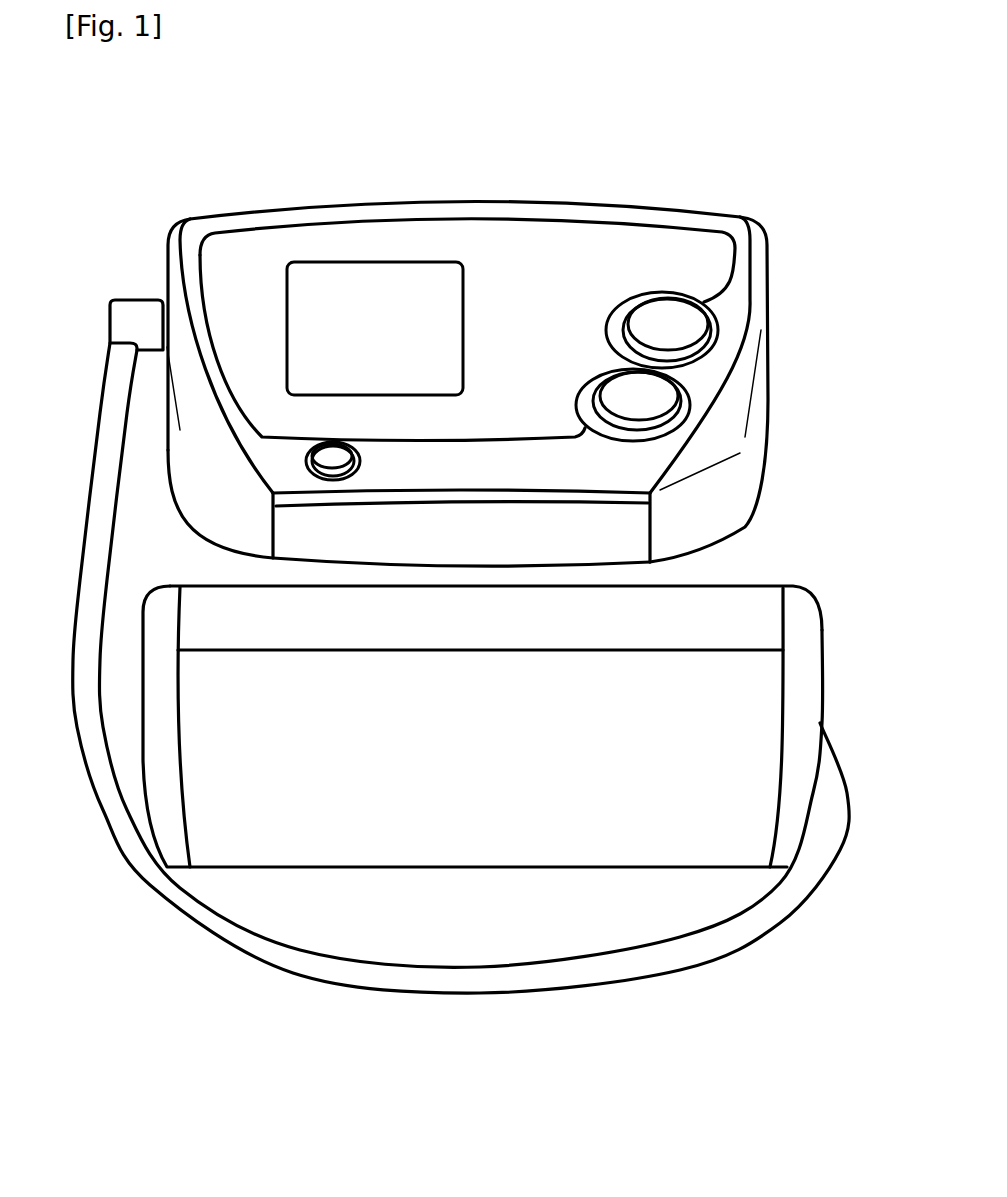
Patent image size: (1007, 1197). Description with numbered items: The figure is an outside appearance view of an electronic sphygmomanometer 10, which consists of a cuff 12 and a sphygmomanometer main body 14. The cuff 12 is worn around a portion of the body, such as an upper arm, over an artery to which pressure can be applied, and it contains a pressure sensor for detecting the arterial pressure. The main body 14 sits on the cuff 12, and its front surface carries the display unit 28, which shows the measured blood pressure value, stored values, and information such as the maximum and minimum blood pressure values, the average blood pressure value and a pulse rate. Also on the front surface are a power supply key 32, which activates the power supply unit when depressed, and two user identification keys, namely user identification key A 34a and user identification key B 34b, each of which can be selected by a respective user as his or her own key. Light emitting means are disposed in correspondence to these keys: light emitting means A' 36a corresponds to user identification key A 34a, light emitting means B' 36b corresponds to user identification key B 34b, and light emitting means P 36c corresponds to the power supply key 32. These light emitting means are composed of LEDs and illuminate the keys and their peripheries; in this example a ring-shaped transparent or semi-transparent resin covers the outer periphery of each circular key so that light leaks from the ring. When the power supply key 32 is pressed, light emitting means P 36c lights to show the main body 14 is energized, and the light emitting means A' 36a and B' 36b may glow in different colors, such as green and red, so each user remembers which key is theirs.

The electronic sphygmomanometer 10 is at (432, 167).
The cuff 12 is at (823, 650).
The sphygmomanometer main body 14 is at (527, 214).
The display unit 28 is at (313, 272).
The power supply key 32 is at (313, 453).
The user identification key A 34a is at (663, 403).
The user identification key B 34b is at (697, 330).
The light emitting means A' 36a is at (660, 428).
The light emitting means B' 36b is at (707, 347).
The light emitting means P 36c is at (300, 452).